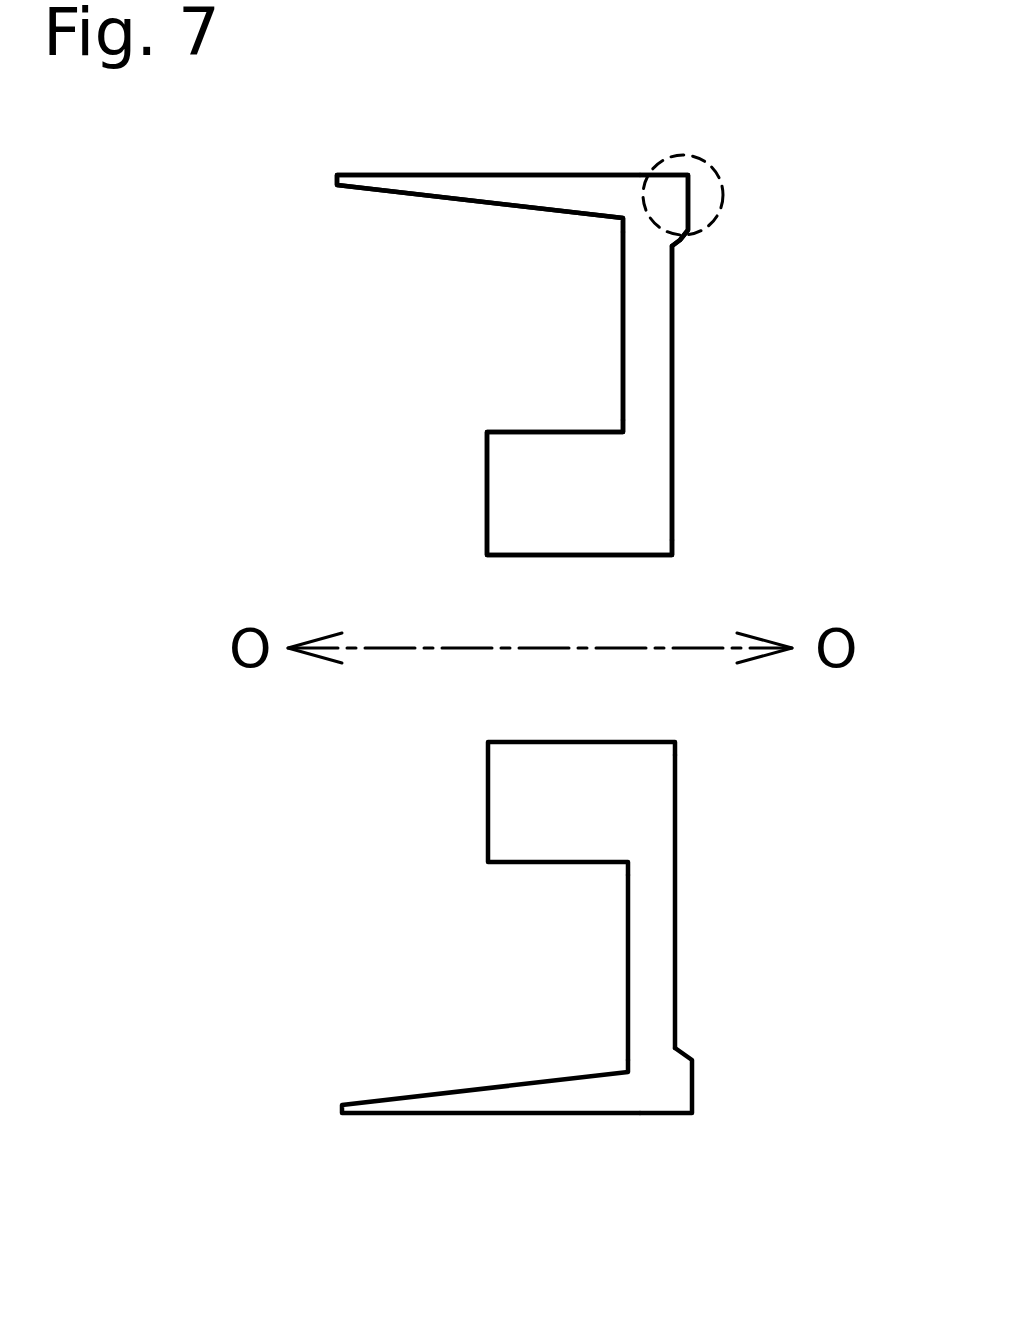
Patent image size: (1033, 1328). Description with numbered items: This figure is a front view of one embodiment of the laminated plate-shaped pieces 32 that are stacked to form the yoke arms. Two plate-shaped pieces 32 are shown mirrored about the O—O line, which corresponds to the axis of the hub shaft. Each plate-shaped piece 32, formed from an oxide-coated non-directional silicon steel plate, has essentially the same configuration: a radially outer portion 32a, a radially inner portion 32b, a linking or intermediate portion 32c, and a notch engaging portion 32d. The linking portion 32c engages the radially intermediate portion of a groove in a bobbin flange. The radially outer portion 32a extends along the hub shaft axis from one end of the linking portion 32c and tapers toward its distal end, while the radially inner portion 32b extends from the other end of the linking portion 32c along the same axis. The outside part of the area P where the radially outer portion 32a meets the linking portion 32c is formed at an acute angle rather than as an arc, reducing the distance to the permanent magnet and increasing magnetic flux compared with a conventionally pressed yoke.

The plate-shaped piece 32 is at (776, 234).
The radially outer portion 32a is at (513, 193).
The radially inner portion 32b is at (522, 483).
The linking portion 32c is at (655, 368).
The notch engaging portion 32d is at (680, 202).
The area connecting the radially outer portion and the linking portion P is at (710, 160).